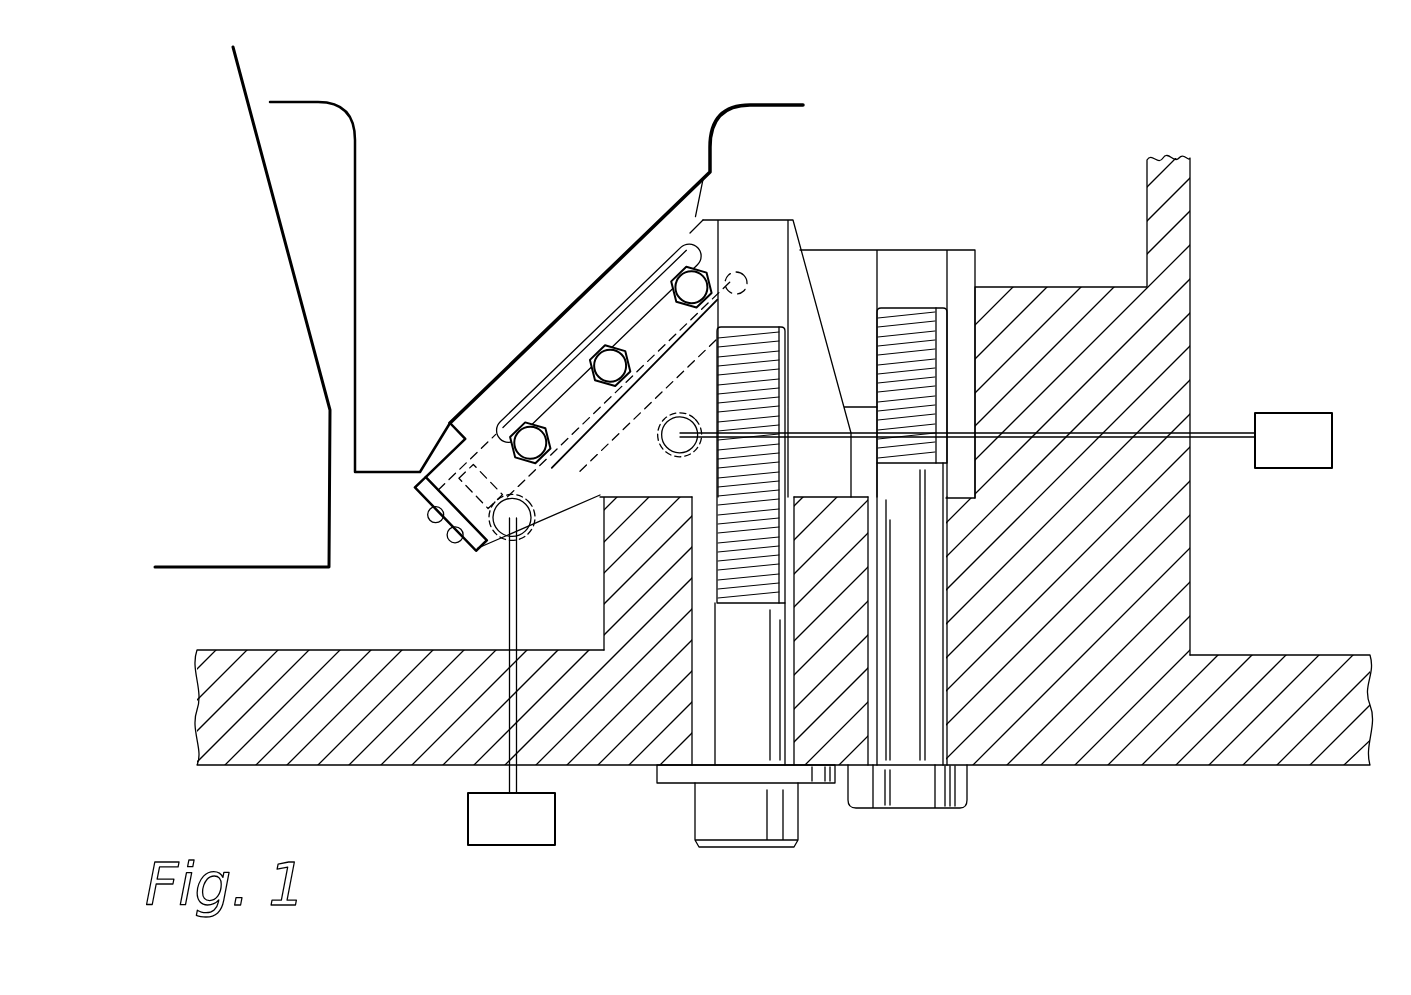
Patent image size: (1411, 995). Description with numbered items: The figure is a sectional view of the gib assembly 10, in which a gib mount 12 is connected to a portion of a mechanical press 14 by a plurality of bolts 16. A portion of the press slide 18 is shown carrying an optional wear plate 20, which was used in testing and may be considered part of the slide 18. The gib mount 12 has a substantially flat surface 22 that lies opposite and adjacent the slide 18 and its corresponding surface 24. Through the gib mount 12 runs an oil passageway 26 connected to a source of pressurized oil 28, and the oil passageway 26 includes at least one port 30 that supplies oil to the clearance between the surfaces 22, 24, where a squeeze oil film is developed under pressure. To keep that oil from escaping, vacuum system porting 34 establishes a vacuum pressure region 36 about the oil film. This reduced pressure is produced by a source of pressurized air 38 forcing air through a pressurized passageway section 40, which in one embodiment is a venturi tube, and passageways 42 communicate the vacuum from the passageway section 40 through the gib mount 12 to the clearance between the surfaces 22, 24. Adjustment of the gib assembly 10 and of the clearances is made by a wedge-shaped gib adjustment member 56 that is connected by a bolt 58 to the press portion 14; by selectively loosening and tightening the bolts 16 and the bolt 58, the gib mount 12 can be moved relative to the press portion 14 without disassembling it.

The gib assembly 10 is at (612, 252).
The gib mount 12 is at (573, 500).
The portion of mechanical press 14 is at (272, 665).
The bolts 16 is at (780, 820).
The press slide 18 is at (415, 238).
The wear plate 20 is at (478, 397).
The surface 22 is at (633, 307).
The surface 24 is at (553, 388).
The oil passageway 26 is at (700, 405).
The source of pressurized oil 28 is at (1331, 420).
The port 30 is at (597, 350).
The vacuum system porting 34 is at (505, 631).
The vacuum pressure region 36 is at (455, 440).
The source of pressurized air 38 is at (555, 822).
The pressurized passageway section 40 is at (500, 540).
The passageways 42 is at (717, 283).
The gib adjustment member 56 is at (962, 268).
The bolt 58 is at (925, 740).